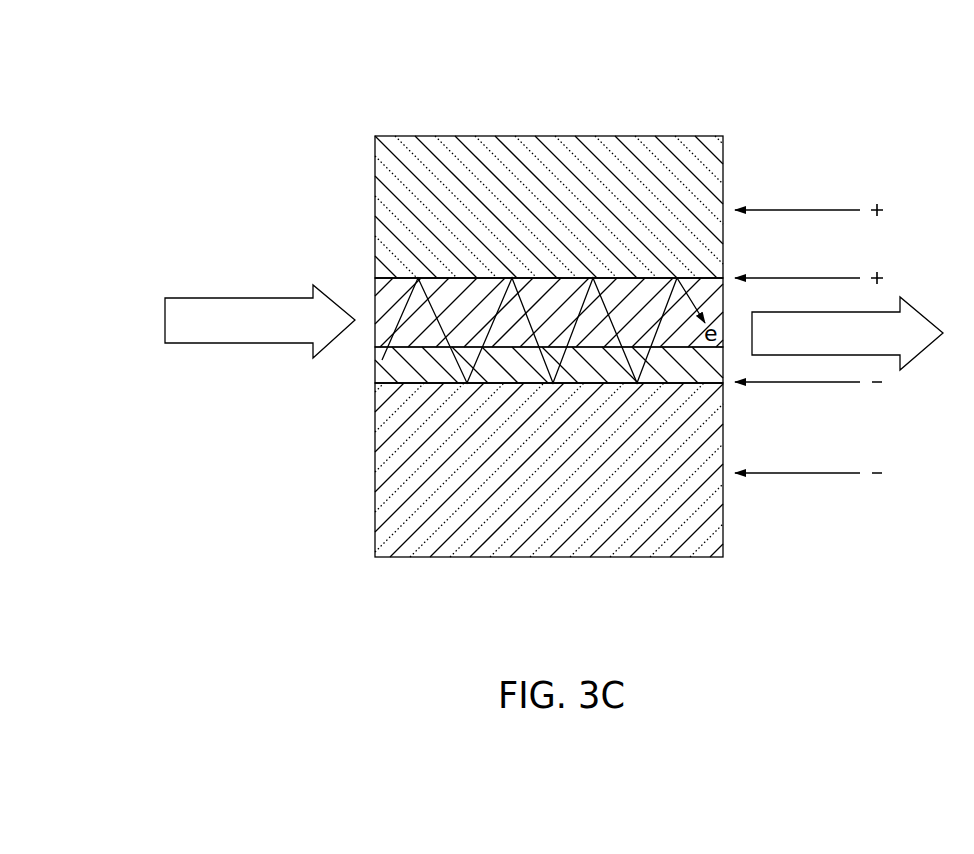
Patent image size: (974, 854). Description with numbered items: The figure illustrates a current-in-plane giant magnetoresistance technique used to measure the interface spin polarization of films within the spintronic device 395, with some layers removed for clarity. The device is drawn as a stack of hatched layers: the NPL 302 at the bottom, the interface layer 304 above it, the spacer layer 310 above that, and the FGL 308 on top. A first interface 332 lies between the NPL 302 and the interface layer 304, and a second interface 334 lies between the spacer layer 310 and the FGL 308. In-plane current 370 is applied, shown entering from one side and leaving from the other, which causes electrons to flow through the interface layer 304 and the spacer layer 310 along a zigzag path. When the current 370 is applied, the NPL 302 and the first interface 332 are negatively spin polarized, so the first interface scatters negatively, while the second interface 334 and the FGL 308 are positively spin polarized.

The spintronic device 395 is at (280, 98).
The FGL 308 is at (569, 228).
The spacer layer 310 is at (571, 311).
The interface layer 304 is at (531, 376).
The NPL 302 is at (569, 483).
The second interface 334 is at (405, 278).
The first interface 332 is at (406, 383).
The current 370 is at (320, 333).